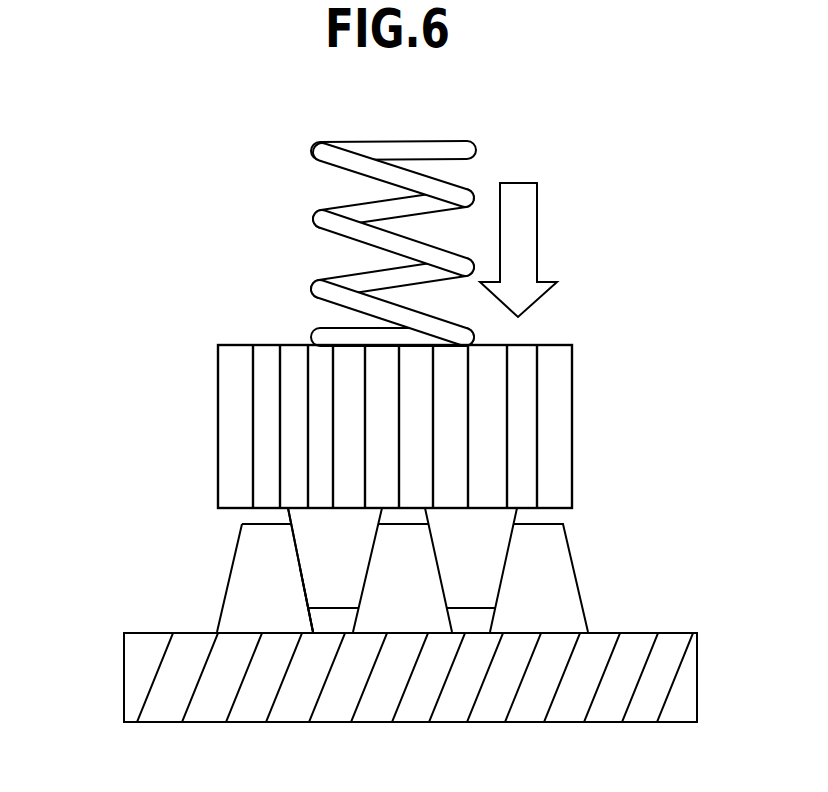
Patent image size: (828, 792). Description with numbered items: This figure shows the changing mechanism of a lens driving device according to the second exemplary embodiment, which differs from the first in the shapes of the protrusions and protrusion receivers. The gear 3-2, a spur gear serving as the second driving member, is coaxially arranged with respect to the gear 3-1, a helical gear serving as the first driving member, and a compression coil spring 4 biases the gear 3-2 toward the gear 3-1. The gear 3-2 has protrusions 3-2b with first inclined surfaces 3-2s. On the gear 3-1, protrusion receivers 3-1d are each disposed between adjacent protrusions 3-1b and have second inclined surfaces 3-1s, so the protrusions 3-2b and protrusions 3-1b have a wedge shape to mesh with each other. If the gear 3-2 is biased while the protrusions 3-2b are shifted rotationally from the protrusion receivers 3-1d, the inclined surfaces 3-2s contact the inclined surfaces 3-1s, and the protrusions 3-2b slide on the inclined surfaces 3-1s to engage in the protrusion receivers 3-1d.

The compression coil spring 4 is at (322, 216).
The gear 3-2 is at (557, 382).
The protrusions 3-2b is at (488, 558).
The inclined surfaces 3-2s is at (377, 517).
The gear 3-1 is at (138, 666).
The protrusions 3-1b is at (252, 561).
The inclined surfaces 3-1s is at (358, 617).
The protrusion receivers 3-1d is at (482, 622).